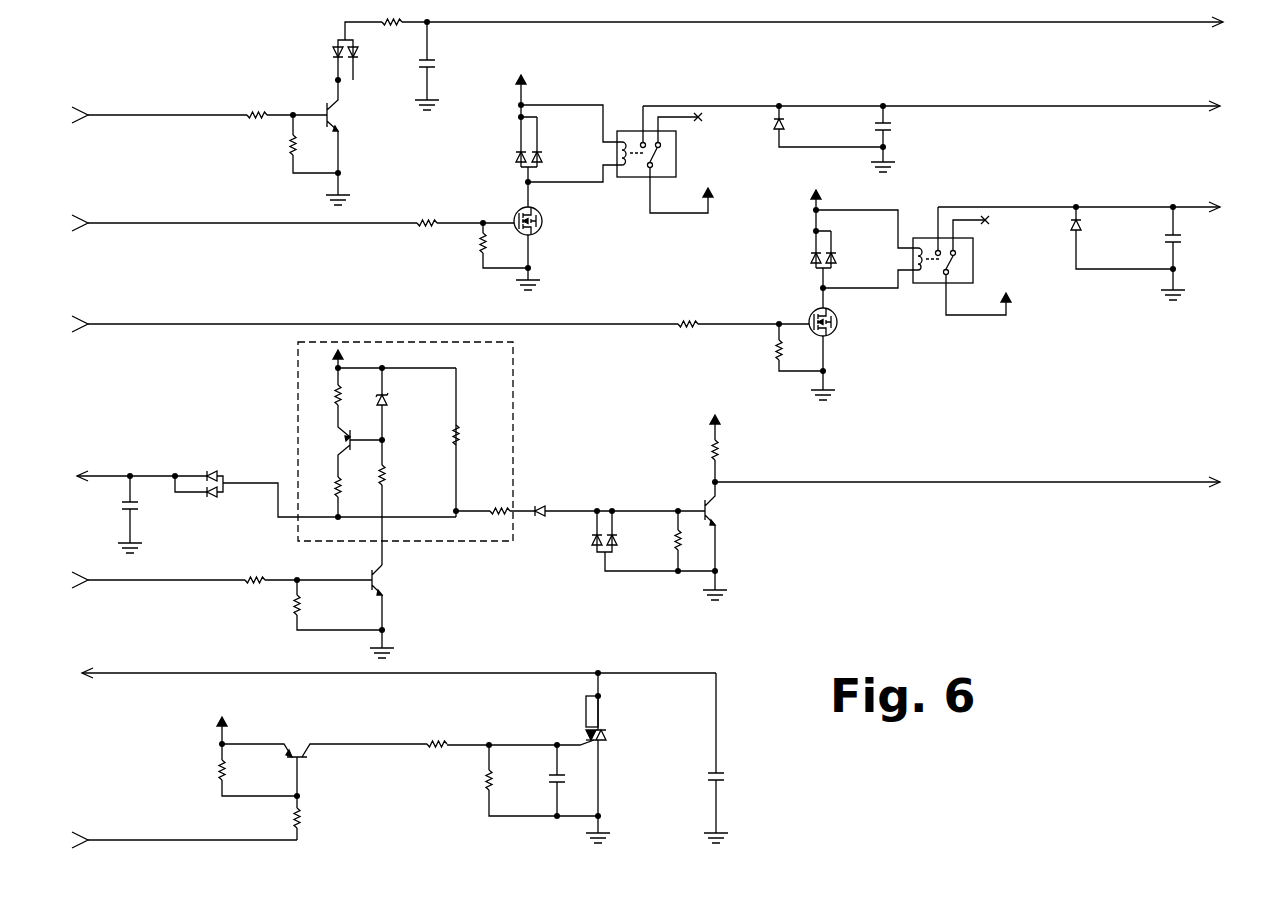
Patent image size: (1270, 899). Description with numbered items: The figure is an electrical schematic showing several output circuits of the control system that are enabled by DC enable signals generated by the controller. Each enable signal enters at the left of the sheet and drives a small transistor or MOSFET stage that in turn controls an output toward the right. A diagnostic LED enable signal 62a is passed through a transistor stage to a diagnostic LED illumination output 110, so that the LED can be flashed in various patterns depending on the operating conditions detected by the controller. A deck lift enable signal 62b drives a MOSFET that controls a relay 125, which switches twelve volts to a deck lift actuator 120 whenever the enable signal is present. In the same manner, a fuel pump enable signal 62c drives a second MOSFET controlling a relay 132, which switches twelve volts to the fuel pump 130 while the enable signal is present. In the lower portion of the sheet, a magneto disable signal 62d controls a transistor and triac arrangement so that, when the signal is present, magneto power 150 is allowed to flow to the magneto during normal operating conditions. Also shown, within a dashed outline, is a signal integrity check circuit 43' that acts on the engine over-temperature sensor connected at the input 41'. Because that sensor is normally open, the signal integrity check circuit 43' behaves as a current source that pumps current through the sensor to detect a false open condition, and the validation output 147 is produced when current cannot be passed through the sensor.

The diagnostic LED enable signal 62a is at (118, 114).
The deck lift enable signal 62b is at (130, 223).
The fuel pump enable signal 62c is at (158, 324).
The magneto disable signal 62d is at (128, 840).
The engine over-temperature sensor input 41' is at (184, 562).
The signal integrity check circuit 43' is at (444, 453).
The diagnostic LED illumination output 110 is at (1222, 26).
The deck lift actuator 120 is at (1220, 110).
The relay 125 is at (676, 158).
The fuel pump 130 is at (1220, 211).
The relay 132 is at (973, 270).
The validation output 147 is at (1220, 486).
The magneto power 150 is at (716, 700).